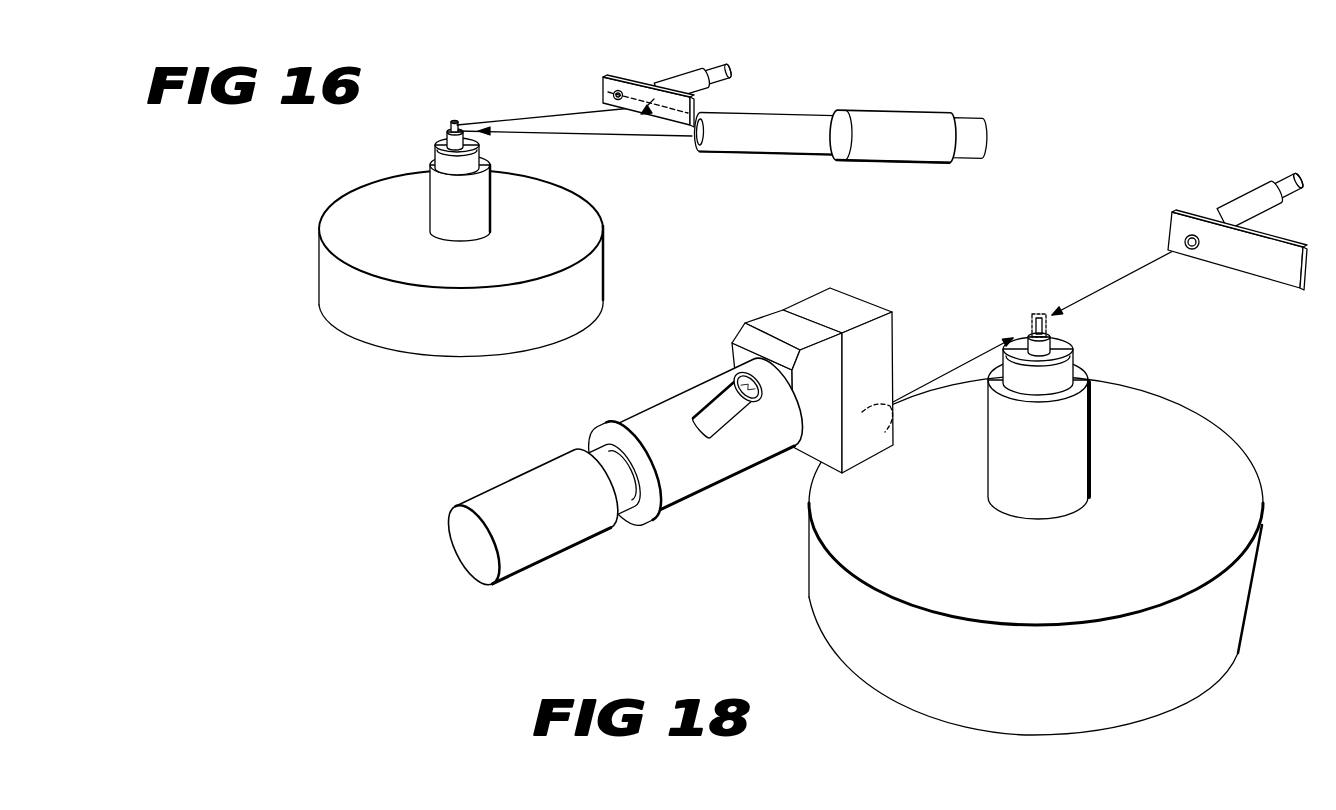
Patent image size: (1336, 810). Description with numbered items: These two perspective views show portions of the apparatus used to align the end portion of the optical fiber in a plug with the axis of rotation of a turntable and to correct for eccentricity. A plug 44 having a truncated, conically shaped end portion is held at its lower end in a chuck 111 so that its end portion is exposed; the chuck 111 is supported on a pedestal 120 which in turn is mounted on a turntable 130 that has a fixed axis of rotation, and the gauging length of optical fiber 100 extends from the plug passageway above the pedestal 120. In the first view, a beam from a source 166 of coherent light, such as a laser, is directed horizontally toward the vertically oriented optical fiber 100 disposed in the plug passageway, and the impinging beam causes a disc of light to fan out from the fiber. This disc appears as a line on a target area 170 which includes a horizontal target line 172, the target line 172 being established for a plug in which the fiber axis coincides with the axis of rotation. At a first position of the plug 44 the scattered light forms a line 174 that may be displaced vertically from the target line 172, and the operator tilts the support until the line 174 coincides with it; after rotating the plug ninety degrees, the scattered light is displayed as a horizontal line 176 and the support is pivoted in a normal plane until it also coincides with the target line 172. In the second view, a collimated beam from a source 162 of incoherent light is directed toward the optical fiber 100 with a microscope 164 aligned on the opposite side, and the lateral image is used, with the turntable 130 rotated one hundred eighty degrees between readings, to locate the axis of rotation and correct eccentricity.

In FIG. 16, the plug 44 is at (443, 136).
In FIG. 18, the plug 44 is at (1054, 325).
In FIG. 16, the needle hub 100 is at (452, 121).
In FIG. 18, the needle hub 100 is at (1043, 312).
In FIG. 16, the chuck 111 is at (487, 155).
In FIG. 16, the pedestal 120 is at (428, 183).
In FIG. 18, the pedestal 120 is at (1076, 450).
In FIG. 16, the turntable 130 is at (604, 261).
In FIG. 18, the turntable 130 is at (1224, 598).
In FIG. 16, the source of incoherent light 162 is at (700, 67).
In FIG. 18, the source of incoherent light 162 is at (1218, 206).
In FIG. 18, the microscope 164 is at (848, 303).
In FIG. 16, the source of coherent light 166 is at (813, 118).
In FIG. 16, the target area 170 is at (642, 82).
In FIG. 18, the target area 170 is at (1258, 283).
In FIG. 16, the target line 172 is at (697, 73).
In FIG. 16, the line of scattered light 174 is at (612, 79).
In FIG. 16, the horizontal line 176 is at (600, 93).